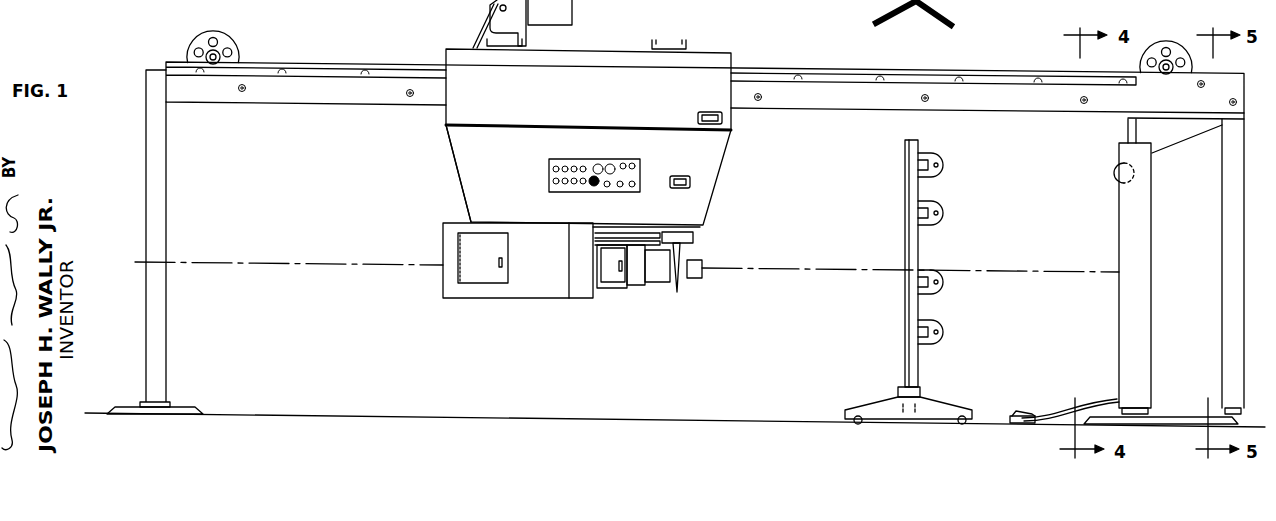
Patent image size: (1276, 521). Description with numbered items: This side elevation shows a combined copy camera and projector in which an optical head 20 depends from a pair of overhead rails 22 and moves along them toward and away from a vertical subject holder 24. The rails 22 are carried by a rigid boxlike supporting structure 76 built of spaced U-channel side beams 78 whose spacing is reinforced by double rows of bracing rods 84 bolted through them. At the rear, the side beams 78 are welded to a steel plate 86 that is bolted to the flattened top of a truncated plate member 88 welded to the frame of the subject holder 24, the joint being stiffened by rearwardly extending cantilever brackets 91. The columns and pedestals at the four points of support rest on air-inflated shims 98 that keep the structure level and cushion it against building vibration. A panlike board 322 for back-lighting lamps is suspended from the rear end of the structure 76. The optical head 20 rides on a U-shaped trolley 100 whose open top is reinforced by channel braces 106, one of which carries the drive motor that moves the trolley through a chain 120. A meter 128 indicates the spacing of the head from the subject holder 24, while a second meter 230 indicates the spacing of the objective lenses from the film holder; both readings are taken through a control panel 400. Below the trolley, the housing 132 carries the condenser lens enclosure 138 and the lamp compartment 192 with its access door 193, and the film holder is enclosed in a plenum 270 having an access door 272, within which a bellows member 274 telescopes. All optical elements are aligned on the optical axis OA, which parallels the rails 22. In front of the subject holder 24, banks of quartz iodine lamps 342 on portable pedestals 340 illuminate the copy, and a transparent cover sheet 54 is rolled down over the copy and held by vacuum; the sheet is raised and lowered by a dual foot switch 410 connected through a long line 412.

The optical head 20 is at (438, 146).
The overhead rails 22 is at (170, 64).
The subject holder 24 is at (1119, 224).
The transparent cover sheet 54 is at (1115, 180).
The boxlike rail supporting structure 76 is at (253, 114).
The U-channel side beams 78 is at (816, 106).
The bracing rods 84 is at (408, 90).
The steel plate 86 is at (1127, 129).
The truncated plate member 88 is at (1127, 137).
The cantilever brackets 91 is at (1172, 146).
The inflatable shims 98 is at (196, 409).
The trolley 100 is at (718, 58).
The channel shaped braces 106 is at (652, 43).
The chain 120 is at (482, 33).
The meter 128 is at (699, 114).
The optical head housing 132 is at (470, 190).
The condenser lens enclosure 138 is at (578, 296).
The compartment 192 is at (523, 290).
The access door 193 is at (462, 246).
The second meter 230 is at (690, 188).
The plenum 270 is at (638, 287).
The access door 272 is at (613, 289).
The bellows member 274 is at (664, 283).
The panlike frame or board 322 is at (1222, 226).
The portable pedestals 340 is at (870, 405).
The quartz iodine lamps 342 is at (945, 204).
The control panel 400 is at (557, 160).
The dual foot switch control 410 is at (1012, 414).
The long line 412 is at (1096, 401).
The optical axis OA is at (146, 262).